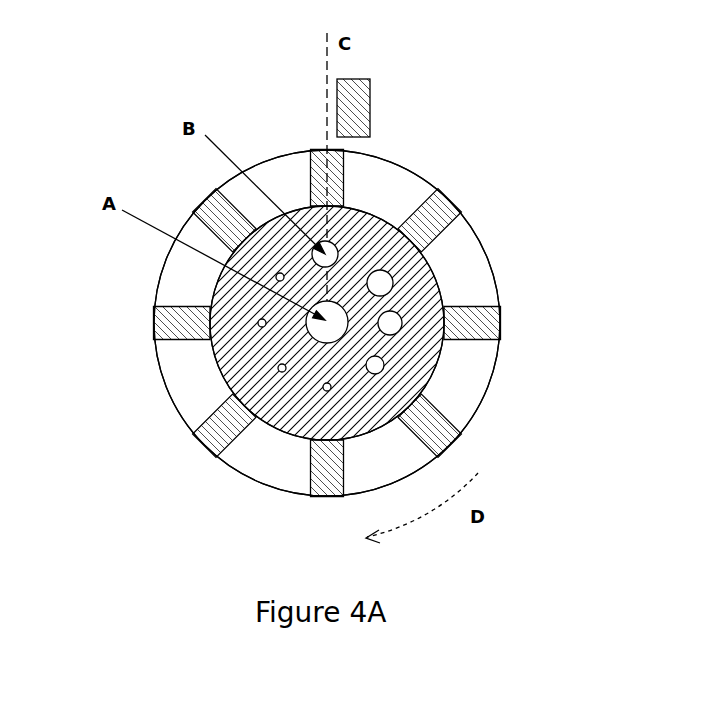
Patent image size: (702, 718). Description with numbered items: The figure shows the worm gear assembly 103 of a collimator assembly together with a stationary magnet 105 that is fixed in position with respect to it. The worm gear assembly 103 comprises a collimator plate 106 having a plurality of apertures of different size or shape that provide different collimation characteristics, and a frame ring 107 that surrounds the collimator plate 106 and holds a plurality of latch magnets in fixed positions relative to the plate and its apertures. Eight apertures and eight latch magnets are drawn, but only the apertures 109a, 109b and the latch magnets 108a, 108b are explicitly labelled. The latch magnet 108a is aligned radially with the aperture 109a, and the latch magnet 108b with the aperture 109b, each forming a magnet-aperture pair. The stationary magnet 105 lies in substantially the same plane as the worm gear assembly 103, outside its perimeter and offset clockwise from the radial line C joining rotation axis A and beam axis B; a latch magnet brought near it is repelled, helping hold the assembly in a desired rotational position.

The worm gear assembly 103 is at (545, 228).
The stationary magnet 105 is at (370, 118).
The collimator plate 106 is at (233, 355).
The frame ring 107 is at (168, 277).
The latch magnet 108a is at (305, 150).
The latch magnet 108b is at (457, 430).
The aperture 109a is at (340, 250).
The aperture 109b is at (375, 374).